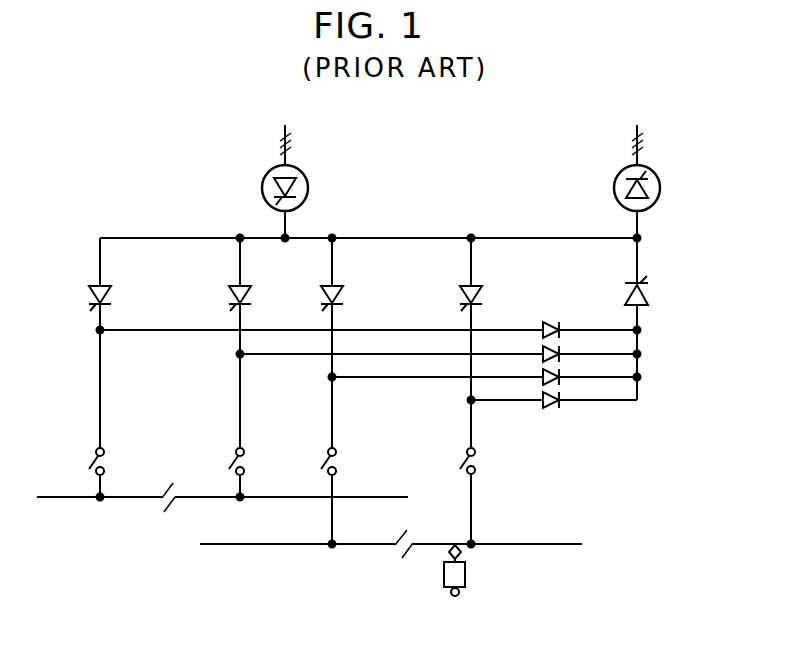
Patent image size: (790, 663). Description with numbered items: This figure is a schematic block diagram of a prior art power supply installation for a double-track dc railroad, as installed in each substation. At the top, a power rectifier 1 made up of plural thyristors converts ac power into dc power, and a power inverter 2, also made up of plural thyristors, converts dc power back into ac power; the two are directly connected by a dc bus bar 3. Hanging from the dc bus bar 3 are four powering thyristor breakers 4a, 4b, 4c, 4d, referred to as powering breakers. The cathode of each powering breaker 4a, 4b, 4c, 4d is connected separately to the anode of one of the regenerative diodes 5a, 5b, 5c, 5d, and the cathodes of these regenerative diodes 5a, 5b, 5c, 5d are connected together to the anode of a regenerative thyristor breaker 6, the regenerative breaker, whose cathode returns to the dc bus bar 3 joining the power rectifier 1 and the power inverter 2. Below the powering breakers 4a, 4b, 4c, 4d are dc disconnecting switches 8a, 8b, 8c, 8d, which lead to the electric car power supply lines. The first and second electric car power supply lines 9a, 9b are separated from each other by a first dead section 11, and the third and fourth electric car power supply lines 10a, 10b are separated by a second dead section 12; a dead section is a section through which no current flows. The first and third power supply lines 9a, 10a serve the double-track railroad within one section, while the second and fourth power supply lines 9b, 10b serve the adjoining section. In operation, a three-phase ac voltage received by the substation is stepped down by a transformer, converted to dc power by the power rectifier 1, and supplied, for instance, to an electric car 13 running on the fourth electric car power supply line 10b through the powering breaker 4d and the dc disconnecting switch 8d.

The power rectifier 1 is at (308, 180).
The power inverter 2 is at (659, 172).
The dc bus bar 3 is at (388, 237).
The powering thyristor breaker 4a is at (90, 287).
The powering thyristor breaker 4b is at (231, 288).
The powering thyristor breaker 4c is at (343, 290).
The powering thyristor breaker 4d is at (482, 292).
The regenerative diode 5a is at (560, 324).
The regenerative diode 5b is at (560, 348).
The regenerative diode 5c is at (560, 371).
The regenerative diode 5d is at (560, 394).
The regenerative thyristor breaker 6 is at (648, 297).
The dc disconnecting switch 8a is at (92, 458).
The dc disconnecting switch 8b is at (230, 458).
The dc disconnecting switch 8c is at (339, 457).
The dc disconnecting switch 8d is at (477, 457).
The first electric car power supply line 9a is at (70, 498).
The second electric car power supply line 9b is at (262, 498).
The third electric car power supply line 10a is at (282, 545).
The fourth electric car power supply line 10b is at (538, 546).
The first dead section 11 is at (164, 505).
The second dead section 12 is at (397, 548).
The electric car 13 is at (445, 580).